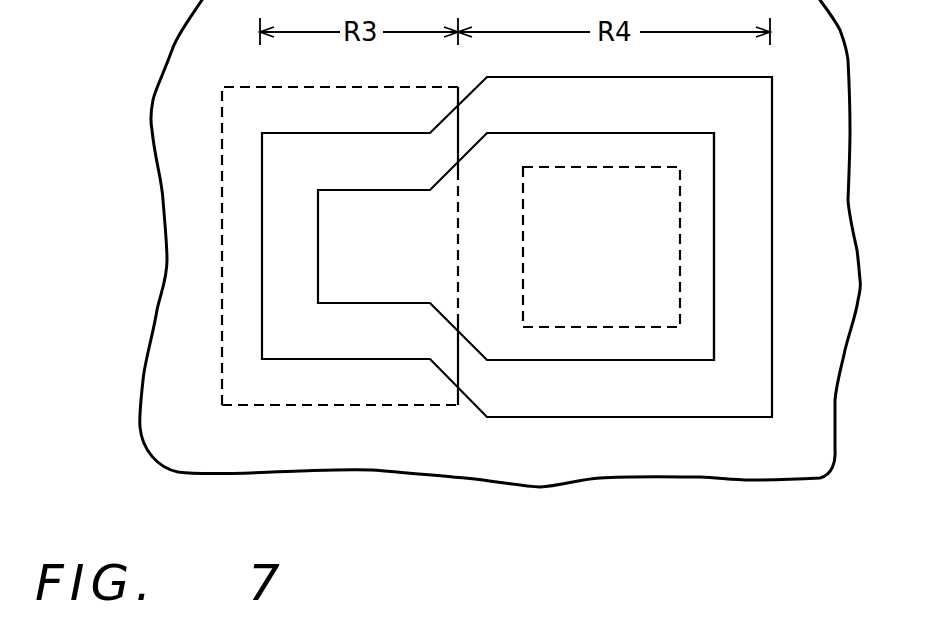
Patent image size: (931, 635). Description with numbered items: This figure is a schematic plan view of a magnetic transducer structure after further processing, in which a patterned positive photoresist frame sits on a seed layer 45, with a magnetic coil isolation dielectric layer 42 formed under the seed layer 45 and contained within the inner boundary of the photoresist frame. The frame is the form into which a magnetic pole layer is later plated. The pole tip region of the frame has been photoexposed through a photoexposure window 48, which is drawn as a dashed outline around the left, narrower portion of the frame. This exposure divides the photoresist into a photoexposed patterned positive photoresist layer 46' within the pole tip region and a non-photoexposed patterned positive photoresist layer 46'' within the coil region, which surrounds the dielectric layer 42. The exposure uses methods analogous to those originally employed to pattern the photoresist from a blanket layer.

The magnetic coil isolation dielectric layer 42 is at (593, 327).
The seed layer 45 is at (178, 307).
The photoexposed patterned positive photoresist layer 46' is at (517, 309).
The non-photoexposed patterned positive photoresist layer 46'' is at (594, 337).
The photoexposure window 48 is at (230, 405).